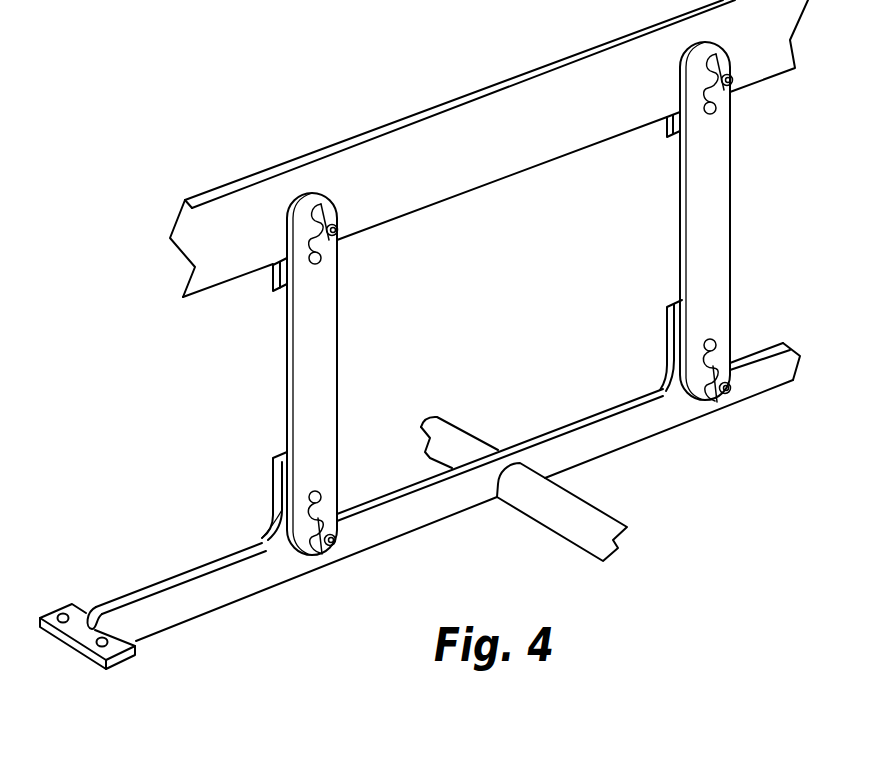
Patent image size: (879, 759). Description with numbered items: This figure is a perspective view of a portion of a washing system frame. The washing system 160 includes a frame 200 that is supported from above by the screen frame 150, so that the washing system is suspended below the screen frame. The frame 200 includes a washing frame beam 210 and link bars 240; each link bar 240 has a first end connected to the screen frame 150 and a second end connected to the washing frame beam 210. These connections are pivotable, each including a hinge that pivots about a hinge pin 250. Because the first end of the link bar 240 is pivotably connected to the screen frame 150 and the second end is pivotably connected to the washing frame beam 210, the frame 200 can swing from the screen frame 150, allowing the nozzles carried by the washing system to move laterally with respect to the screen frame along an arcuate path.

The screen frame 150 is at (425, 132).
The washing system 160 is at (632, 495).
The frame 200 is at (110, 436).
The washing frame beam 210 is at (650, 426).
The link bar 240 is at (300, 370).
The hinge pin 250 is at (337, 546).